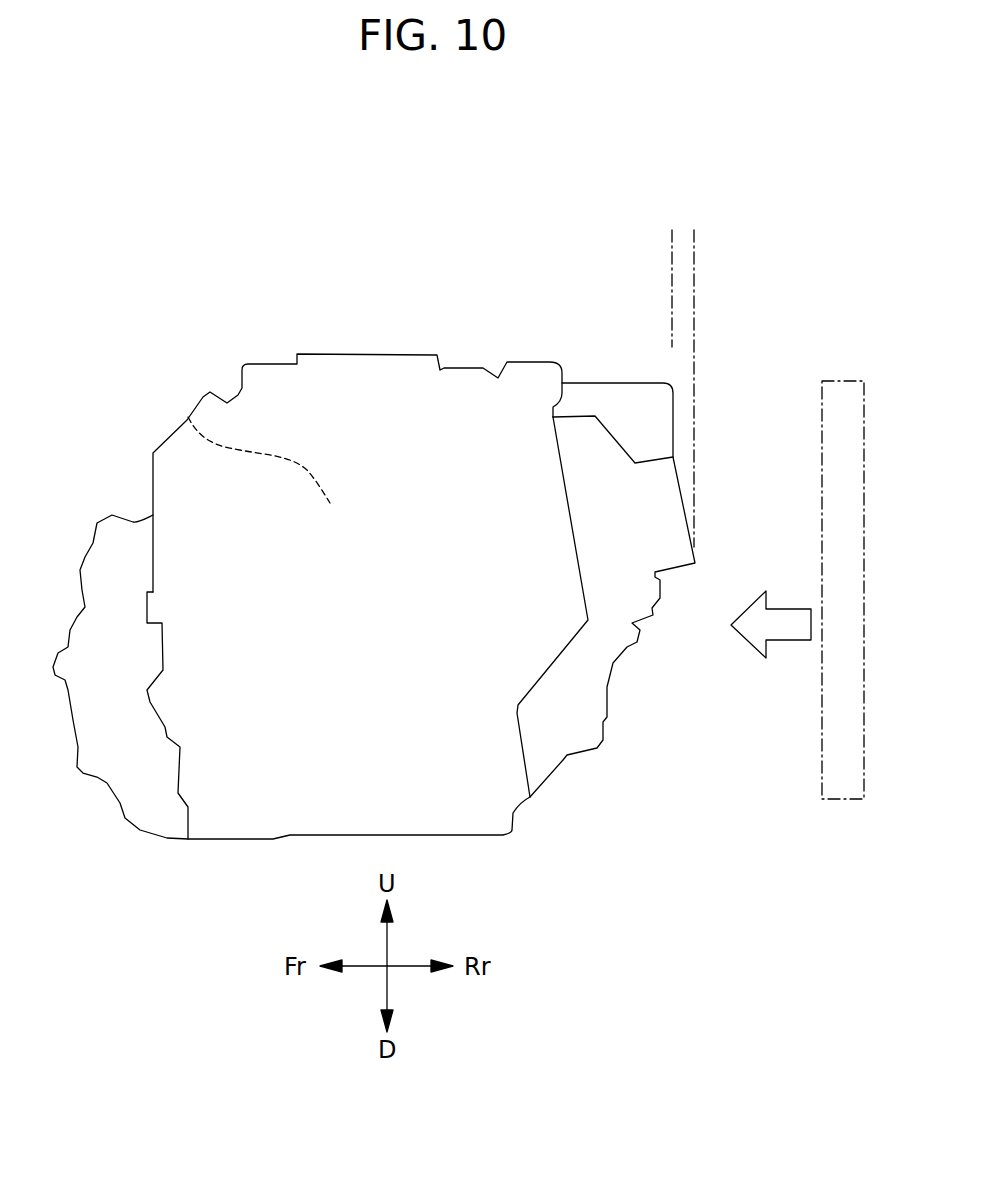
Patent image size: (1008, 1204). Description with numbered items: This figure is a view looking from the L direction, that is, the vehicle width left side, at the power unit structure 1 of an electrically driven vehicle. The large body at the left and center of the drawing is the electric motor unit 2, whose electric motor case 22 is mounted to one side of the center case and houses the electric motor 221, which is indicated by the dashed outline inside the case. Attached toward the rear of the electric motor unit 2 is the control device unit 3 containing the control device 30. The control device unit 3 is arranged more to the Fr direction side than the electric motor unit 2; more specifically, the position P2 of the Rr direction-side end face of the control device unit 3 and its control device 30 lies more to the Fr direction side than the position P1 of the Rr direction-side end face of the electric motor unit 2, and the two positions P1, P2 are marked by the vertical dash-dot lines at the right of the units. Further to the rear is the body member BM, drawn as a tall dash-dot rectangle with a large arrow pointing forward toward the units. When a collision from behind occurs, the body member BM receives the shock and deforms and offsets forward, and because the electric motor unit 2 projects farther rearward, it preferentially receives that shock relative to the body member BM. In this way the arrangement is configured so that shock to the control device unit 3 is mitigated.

The power unit structure 1 is at (502, 184).
The electric motor unit 2 is at (397, 331).
The electric motor case 22 is at (292, 407).
The electric motor 221 is at (188, 417).
The control device unit 3 is at (599, 348).
The control device 30 is at (643, 402).
The position of Rr direction-side end face of electric motor unit P1 is at (696, 252).
The position of Rr direction-side end face of control device unit P2 is at (670, 252).
The body member BM is at (843, 380).